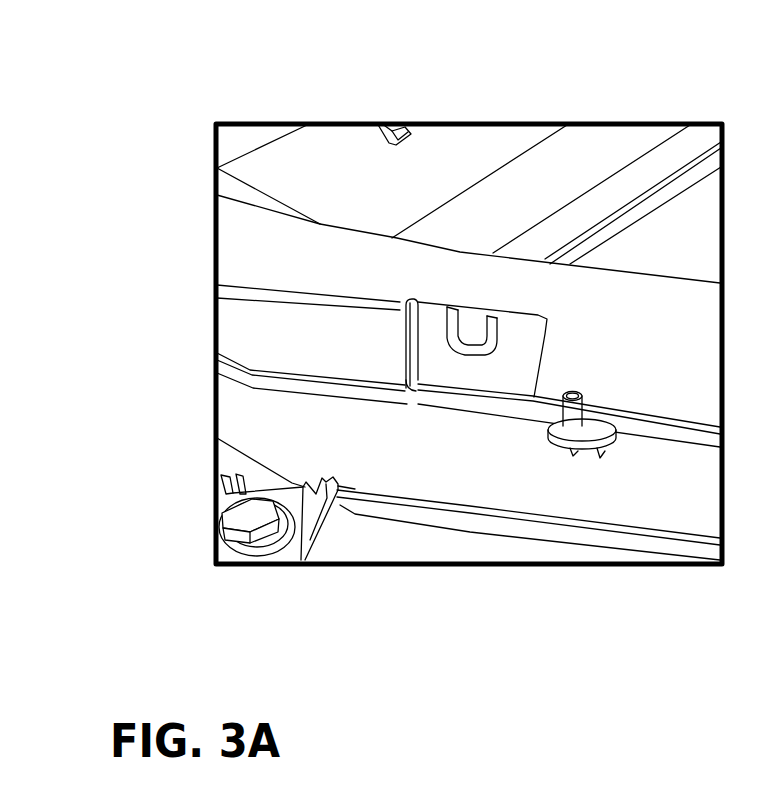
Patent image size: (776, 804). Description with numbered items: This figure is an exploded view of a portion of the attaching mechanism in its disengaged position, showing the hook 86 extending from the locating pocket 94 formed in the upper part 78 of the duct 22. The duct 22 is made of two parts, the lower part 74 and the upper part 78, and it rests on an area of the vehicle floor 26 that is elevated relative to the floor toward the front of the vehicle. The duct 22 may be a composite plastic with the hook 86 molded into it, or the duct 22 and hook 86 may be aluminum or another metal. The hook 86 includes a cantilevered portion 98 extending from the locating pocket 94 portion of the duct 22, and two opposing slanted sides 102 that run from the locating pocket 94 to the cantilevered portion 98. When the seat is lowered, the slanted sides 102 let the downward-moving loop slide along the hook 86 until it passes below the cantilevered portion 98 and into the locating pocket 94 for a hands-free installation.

The duct 22 is at (670, 508).
The vehicle floor 26 is at (362, 533).
The lower part 74 is at (638, 486).
The upper part 78 is at (650, 300).
The hook 86 is at (490, 316).
The locating pocket 94 is at (434, 324).
The cantilevered portion 98 is at (468, 350).
The opposing slanted sides 102 is at (463, 311).